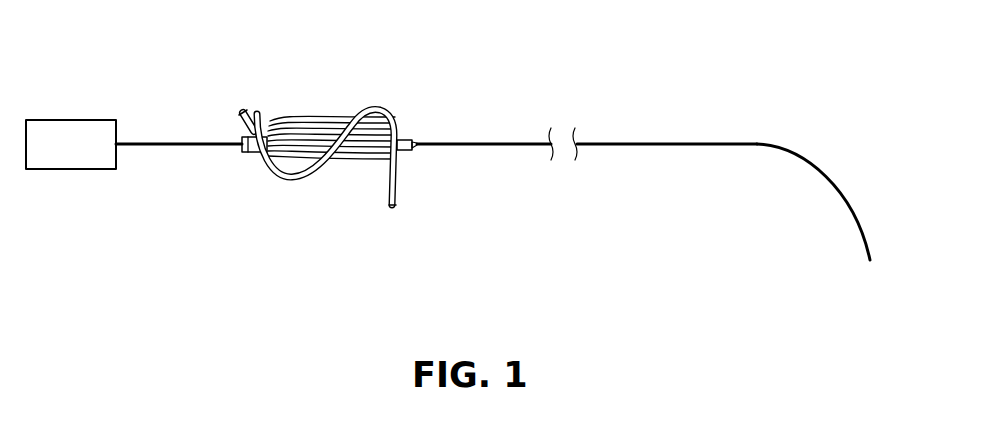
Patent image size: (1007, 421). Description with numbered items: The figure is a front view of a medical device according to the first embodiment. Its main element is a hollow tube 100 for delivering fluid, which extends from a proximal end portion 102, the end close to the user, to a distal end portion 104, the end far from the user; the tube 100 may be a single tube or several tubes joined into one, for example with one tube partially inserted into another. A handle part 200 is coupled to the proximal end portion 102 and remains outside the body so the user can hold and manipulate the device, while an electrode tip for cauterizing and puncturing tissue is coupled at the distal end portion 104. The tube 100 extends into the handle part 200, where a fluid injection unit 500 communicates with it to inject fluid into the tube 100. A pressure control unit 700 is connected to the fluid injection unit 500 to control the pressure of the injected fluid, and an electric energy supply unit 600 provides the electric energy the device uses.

The tube 100 is at (493, 134).
The proximal end portion 102 is at (483, 143).
The distal end portion 104 is at (821, 175).
The handle part 200 is at (367, 108).
The fluid injection unit 500 is at (245, 156).
The electric energy supply unit 600 is at (241, 110).
The pressure control unit 700 is at (71, 144).